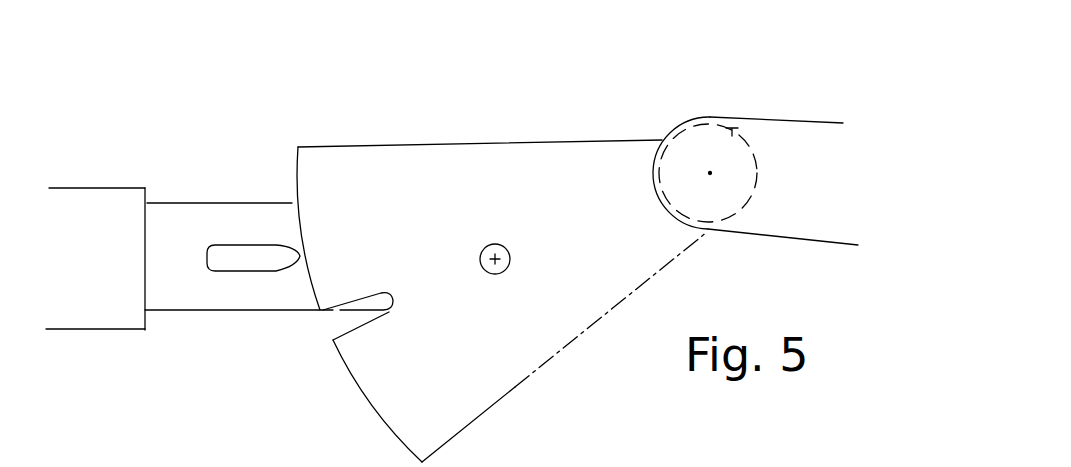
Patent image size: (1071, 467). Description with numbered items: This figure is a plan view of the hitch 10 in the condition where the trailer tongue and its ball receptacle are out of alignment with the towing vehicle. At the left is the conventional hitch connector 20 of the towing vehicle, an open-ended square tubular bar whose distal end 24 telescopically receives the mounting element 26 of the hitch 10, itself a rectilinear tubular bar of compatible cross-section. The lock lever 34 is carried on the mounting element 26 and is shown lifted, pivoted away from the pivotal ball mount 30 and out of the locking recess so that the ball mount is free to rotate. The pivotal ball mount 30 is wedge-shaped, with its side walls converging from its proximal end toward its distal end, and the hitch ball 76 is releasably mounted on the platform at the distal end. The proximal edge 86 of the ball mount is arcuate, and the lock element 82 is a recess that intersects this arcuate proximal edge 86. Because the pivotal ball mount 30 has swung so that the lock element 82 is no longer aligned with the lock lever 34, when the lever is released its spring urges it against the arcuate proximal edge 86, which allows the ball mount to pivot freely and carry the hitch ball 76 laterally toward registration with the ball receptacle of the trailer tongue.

The hitch 10 is at (518, 85).
The hitch connector 20 is at (82, 193).
The distal end 24 is at (131, 313).
The mounting element 26 is at (210, 214).
The pivotal ball mount 30 is at (414, 136).
The lock lever 34 is at (259, 260).
The hitch ball 76 is at (745, 118).
The lock element 82 is at (356, 324).
The proximal edge 86 is at (388, 428).